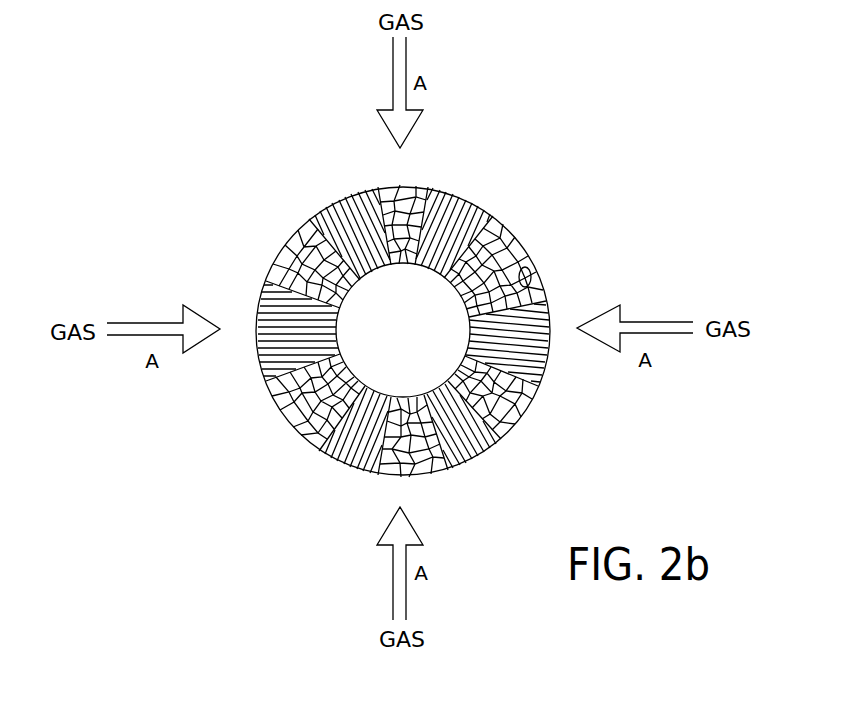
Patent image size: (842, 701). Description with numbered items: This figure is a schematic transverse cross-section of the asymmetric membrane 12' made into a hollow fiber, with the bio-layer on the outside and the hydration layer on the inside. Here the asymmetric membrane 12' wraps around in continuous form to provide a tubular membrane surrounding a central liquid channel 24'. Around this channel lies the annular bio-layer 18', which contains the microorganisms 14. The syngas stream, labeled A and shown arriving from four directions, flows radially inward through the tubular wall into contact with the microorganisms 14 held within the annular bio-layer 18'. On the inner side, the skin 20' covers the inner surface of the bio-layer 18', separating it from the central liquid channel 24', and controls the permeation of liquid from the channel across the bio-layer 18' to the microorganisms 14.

The asymmetric membrane 12' is at (403, 309).
The central liquid channel 24' is at (425, 276).
The microorganisms 14 is at (492, 238).
The annular bio-layer 18' is at (526, 348).
The skin 20' is at (344, 447).